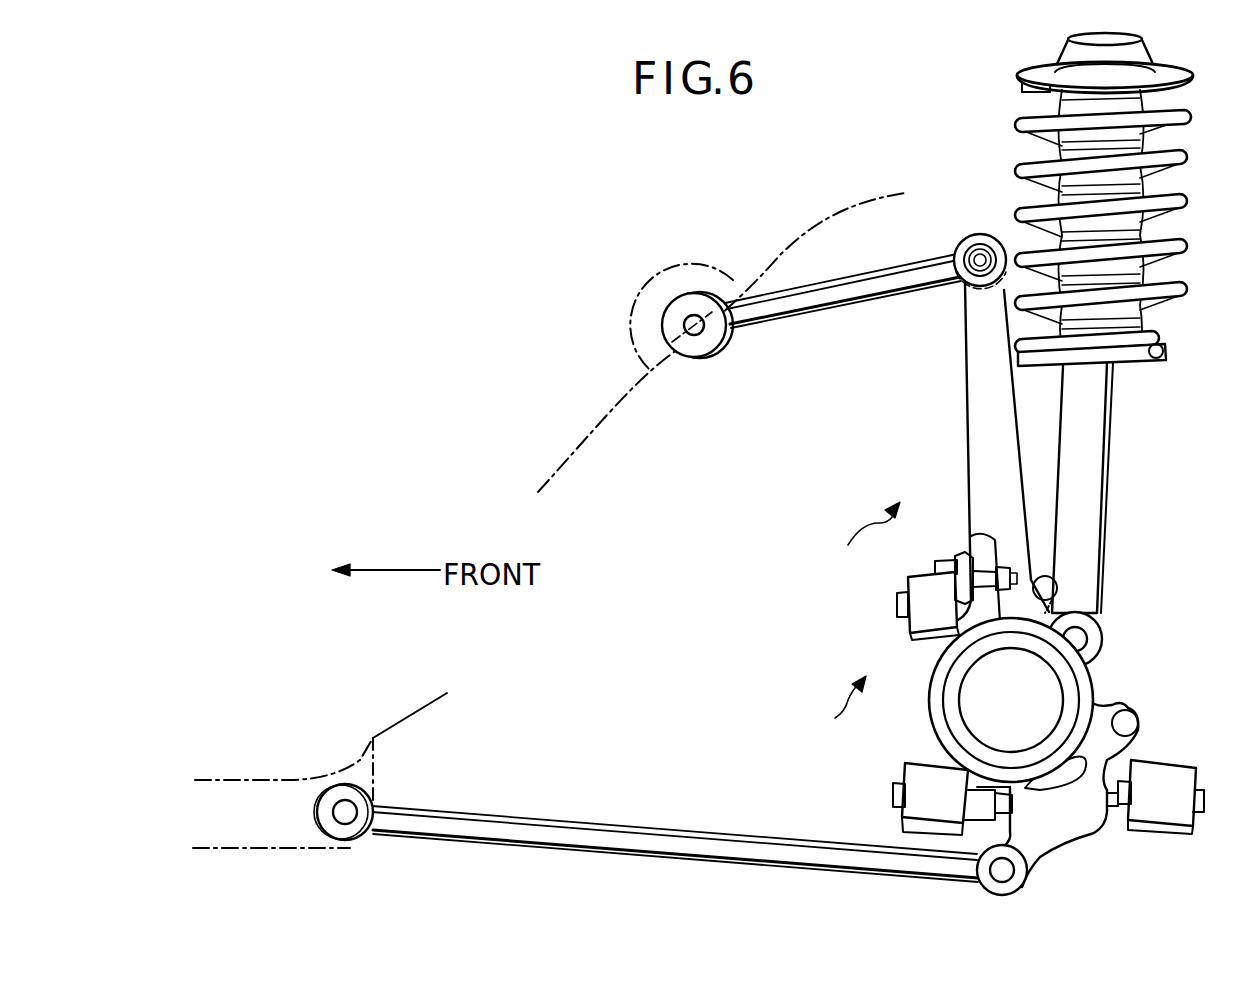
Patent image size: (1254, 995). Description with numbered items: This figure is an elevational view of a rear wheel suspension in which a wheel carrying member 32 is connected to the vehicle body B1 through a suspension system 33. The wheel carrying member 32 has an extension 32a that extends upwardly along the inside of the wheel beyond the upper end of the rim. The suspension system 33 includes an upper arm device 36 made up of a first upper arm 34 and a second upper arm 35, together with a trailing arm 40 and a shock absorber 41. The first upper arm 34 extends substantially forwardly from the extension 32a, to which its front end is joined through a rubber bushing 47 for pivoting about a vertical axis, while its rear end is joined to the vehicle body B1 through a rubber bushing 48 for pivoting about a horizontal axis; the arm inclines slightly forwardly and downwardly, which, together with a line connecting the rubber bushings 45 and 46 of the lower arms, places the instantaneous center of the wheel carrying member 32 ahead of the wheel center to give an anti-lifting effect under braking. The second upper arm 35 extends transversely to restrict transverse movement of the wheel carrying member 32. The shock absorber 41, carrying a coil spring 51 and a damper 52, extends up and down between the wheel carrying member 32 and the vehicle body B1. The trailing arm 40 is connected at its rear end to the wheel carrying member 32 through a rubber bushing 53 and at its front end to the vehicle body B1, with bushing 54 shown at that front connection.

The shock absorber 41 is at (1131, 323).
The coil spring 51 is at (1168, 274).
The damper 52 is at (1120, 440).
The rubber bushing 47 is at (978, 238).
The first upper arm 34 is at (866, 280).
The rubber bushing 48 is at (705, 350).
The vehicle body B1 is at (608, 425).
The extension 32a is at (965, 346).
The wheel carrying member 32 is at (930, 700).
The upper arm device 36 is at (856, 539).
The second upper arm 35 is at (935, 570).
The suspension system 33 is at (831, 706).
The rubber bushing 46 is at (922, 763).
The rubber bushing 45 is at (1168, 760).
The trailing arm 40 is at (543, 822).
The lower arm body-side bushing 54 is at (352, 826).
The rubber bushing 53 is at (1024, 872).